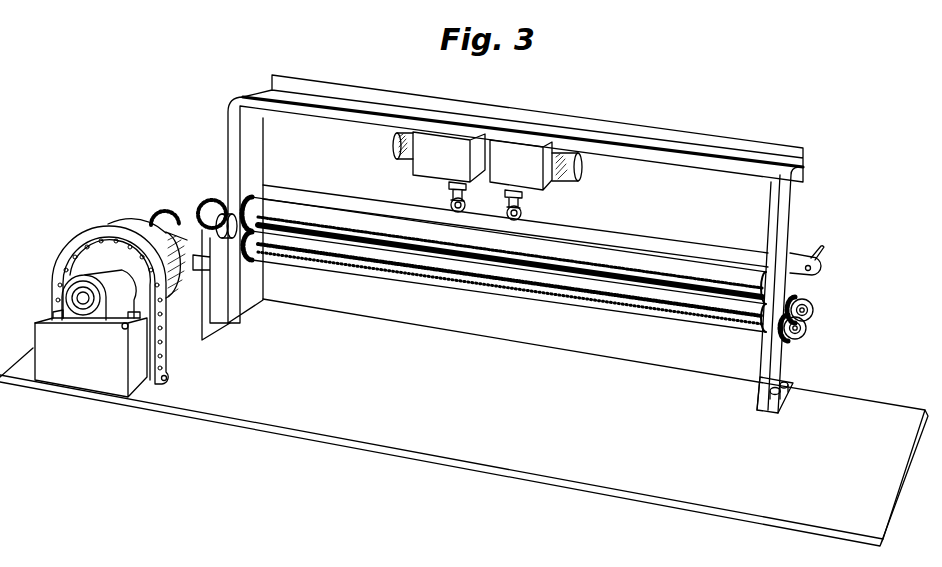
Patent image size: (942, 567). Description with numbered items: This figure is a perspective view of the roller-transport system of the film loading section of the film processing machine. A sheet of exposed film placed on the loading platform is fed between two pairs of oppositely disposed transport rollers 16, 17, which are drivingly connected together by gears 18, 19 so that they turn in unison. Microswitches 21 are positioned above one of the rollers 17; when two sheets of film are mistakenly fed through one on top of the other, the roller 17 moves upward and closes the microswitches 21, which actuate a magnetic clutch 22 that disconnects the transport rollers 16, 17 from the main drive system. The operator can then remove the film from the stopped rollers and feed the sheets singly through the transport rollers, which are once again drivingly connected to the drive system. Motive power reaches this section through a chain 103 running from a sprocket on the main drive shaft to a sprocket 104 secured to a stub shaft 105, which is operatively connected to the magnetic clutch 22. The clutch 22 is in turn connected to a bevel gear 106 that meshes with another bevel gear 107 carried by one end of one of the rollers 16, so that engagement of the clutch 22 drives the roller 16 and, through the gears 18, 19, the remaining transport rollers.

The transport roller 16 is at (335, 215).
The transport roller 17 is at (613, 243).
The gear 18 is at (252, 194).
The gear 19 is at (805, 298).
The microswitch 21 is at (420, 168).
The magnetic clutch 22 is at (135, 228).
The chain 103 is at (160, 358).
The sprocket 104 is at (82, 248).
The stub shaft 105 is at (77, 296).
The bevel gear 106 is at (168, 213).
The bevel gear 107 is at (213, 210).